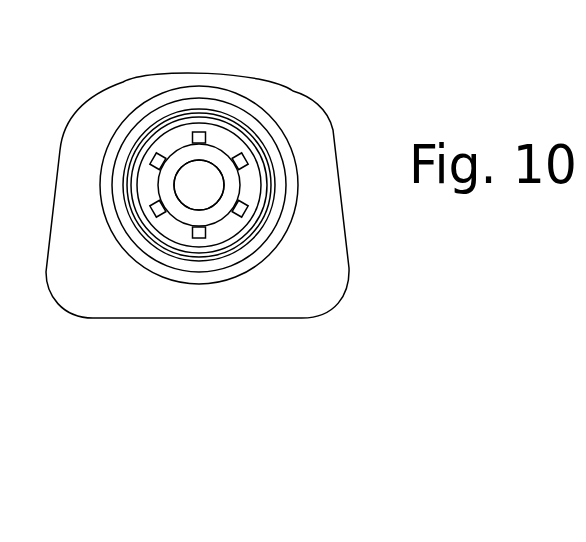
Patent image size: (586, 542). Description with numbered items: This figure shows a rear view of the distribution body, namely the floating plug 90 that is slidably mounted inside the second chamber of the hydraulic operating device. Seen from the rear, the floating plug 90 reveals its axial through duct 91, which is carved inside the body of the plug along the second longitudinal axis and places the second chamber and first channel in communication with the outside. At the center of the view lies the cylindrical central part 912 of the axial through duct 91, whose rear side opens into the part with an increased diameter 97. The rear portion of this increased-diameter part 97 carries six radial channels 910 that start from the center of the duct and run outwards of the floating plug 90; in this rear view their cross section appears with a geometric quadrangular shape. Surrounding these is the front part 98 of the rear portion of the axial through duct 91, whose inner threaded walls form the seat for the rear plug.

The floating plug 90 is at (289, 94).
The axial through duct 91 is at (201, 166).
The part with an increased diameter 97 is at (178, 162).
The front part 98 is at (222, 140).
The radial channels 910 is at (195, 132).
The cylindrical central part 912 is at (182, 190).